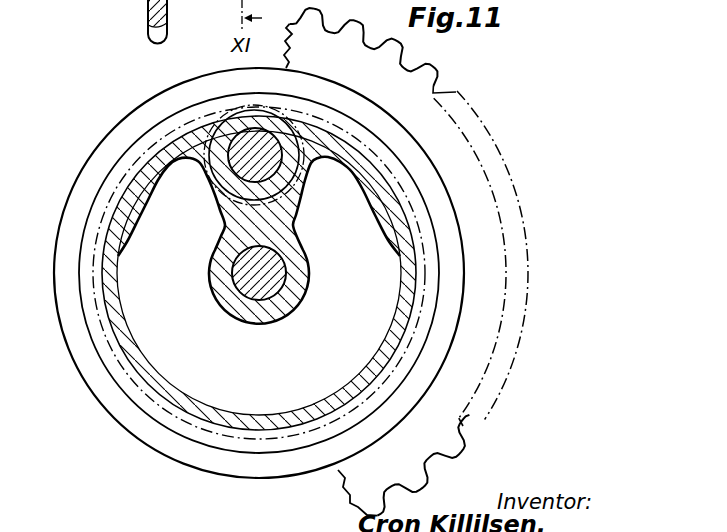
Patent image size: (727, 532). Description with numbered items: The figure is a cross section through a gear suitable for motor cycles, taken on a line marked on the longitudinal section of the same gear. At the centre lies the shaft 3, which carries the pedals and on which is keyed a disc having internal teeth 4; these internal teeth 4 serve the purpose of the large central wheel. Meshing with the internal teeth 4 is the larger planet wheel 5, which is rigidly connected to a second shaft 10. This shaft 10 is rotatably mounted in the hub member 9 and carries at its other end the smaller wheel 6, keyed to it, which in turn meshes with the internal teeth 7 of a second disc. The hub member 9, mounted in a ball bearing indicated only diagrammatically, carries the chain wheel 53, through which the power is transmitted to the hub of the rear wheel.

The shaft 3 is at (270, 280).
The internal teeth 4 is at (163, 138).
The larger planet wheel 5 is at (305, 152).
The smaller wheel 6 is at (297, 192).
The internal teeth 7 is at (142, 167).
The hub member 9 is at (142, 362).
The shaft 10 is at (256, 168).
The chain wheel 53 is at (428, 90).